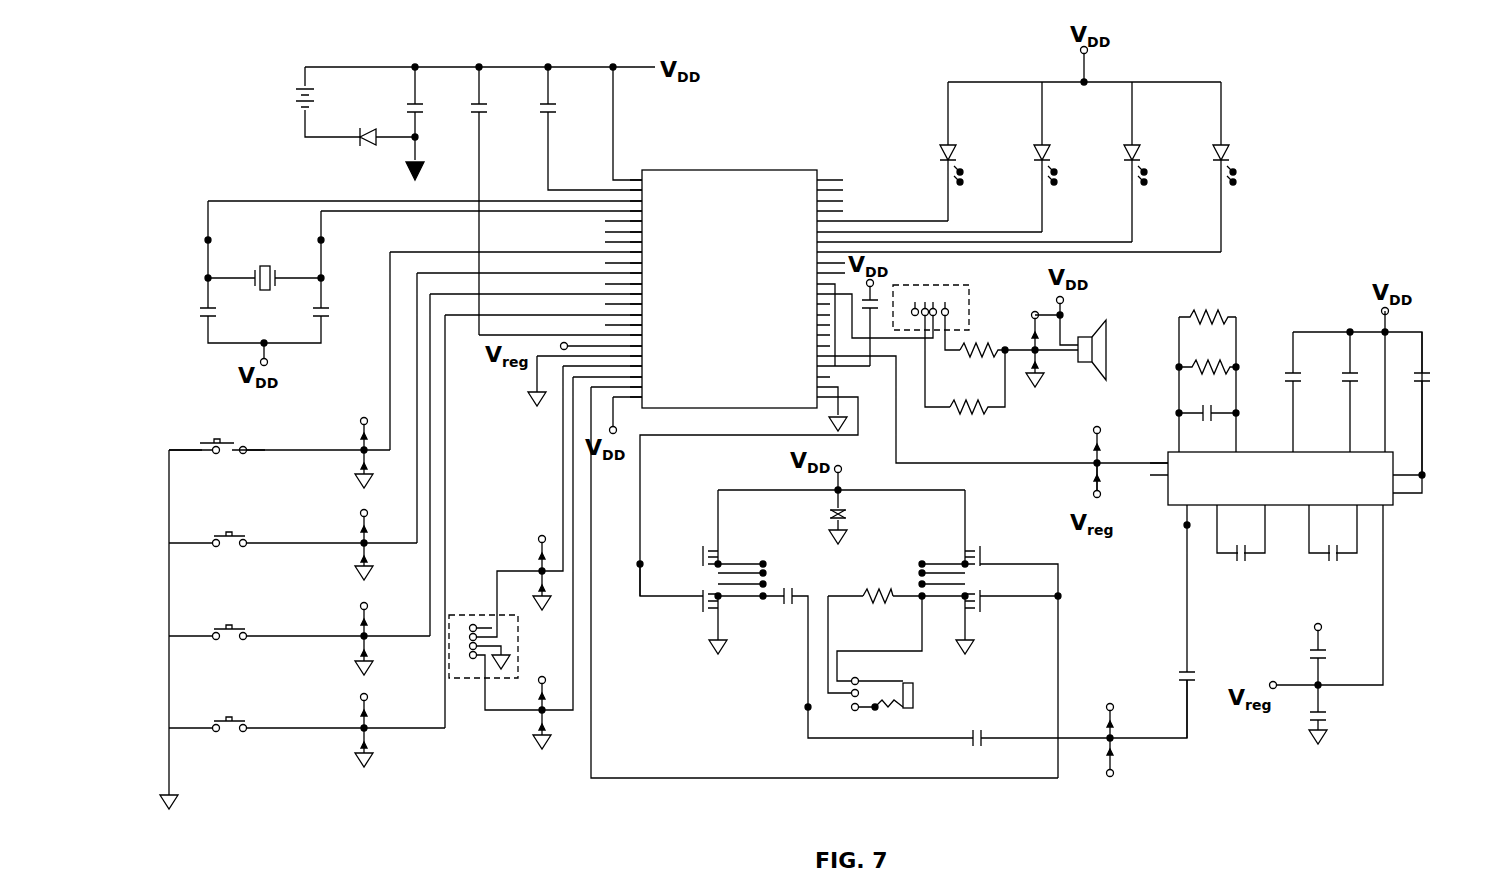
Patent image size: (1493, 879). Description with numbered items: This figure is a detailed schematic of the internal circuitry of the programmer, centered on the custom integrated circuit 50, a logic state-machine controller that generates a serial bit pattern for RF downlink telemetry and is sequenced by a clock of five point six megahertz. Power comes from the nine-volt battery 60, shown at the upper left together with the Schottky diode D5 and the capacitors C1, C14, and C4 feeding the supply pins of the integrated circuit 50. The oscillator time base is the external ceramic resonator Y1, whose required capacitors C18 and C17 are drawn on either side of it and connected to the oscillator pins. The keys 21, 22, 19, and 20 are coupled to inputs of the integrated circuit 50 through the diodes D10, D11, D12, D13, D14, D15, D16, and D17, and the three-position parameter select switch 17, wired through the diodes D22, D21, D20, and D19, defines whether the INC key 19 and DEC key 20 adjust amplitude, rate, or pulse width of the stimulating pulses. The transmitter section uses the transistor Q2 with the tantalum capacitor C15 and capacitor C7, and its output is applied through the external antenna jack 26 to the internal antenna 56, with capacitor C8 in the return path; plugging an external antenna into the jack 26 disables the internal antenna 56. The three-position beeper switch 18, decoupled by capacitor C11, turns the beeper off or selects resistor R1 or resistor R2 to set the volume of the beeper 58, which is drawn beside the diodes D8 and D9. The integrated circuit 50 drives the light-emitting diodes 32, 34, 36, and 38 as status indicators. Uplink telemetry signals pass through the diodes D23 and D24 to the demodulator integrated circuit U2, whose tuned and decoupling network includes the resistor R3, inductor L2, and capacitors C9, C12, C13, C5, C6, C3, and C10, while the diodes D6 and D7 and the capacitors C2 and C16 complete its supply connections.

The custom integrated circuit 50 is at (708, 170).
The 9-volt battery 60 is at (310, 102).
The Schottky diode D5 is at (360, 143).
The capacitor C1 is at (408, 117).
The capacitor C14 is at (471, 117).
The capacitor C4 is at (541, 117).
The ceramic resonator Y1 is at (262, 270).
The capacitor C18 is at (200, 312).
The capacitor C17 is at (330, 318).
The key 21 is at (216, 472).
The key 22 is at (216, 565).
The INC key 19 is at (211, 650).
The DEC key 20 is at (216, 744).
The diode D10 is at (360, 436).
The diode D11 is at (360, 470).
The diode D12 is at (360, 530).
The diode D13 is at (360, 563).
The diode D14 is at (360, 623).
The diode D15 is at (360, 656).
The diode D16 is at (360, 714).
The diode D17 is at (360, 746).
The parameter select switch 17 is at (467, 678).
The diode D22 is at (538, 554).
The diode D21 is at (548, 590).
The diode D20 is at (548, 696).
The diode D19 is at (540, 730).
The transistor Q2 is at (695, 548).
The tantalum capacitor C15 is at (867, 524).
The capacitor C7 is at (776, 605).
The internal antenna 56 is at (876, 594).
The external antenna jack 26 is at (915, 696).
The capacitor C8 is at (978, 732).
The capacitor C11 is at (880, 298).
The beeper switch 18 is at (969, 292).
The resistor R1 is at (970, 352).
The resistor R2 is at (974, 408).
The diode D8 is at (1028, 340).
The diode D9 is at (1040, 370).
The beeper 58 is at (1092, 330).
The light-emitting diode 32 is at (941, 130).
The light-emitting diode 34 is at (1033, 130).
The light-emitting diode 36 is at (1123, 130).
The light-emitting diode 38 is at (1212, 130).
The diode D23 is at (1093, 448).
The diode D24 is at (1093, 482).
The demodulator integrated circuit U2 is at (1170, 515).
The resistor R3 is at (1207, 316).
The inductor L2 is at (1207, 352).
The capacitor C9 is at (1206, 414).
The capacitor C12 is at (1288, 372).
The capacitor C13 is at (1345, 385).
The capacitor C5 is at (1430, 372).
The capacitor C6 is at (1232, 560).
The capacitor C3 is at (1336, 558).
The capacitor C10 is at (1180, 676).
The diode D6 is at (1114, 726).
The diode D7 is at (1114, 758).
The capacitor C2 is at (1310, 660).
The capacitor C16 is at (1328, 722).